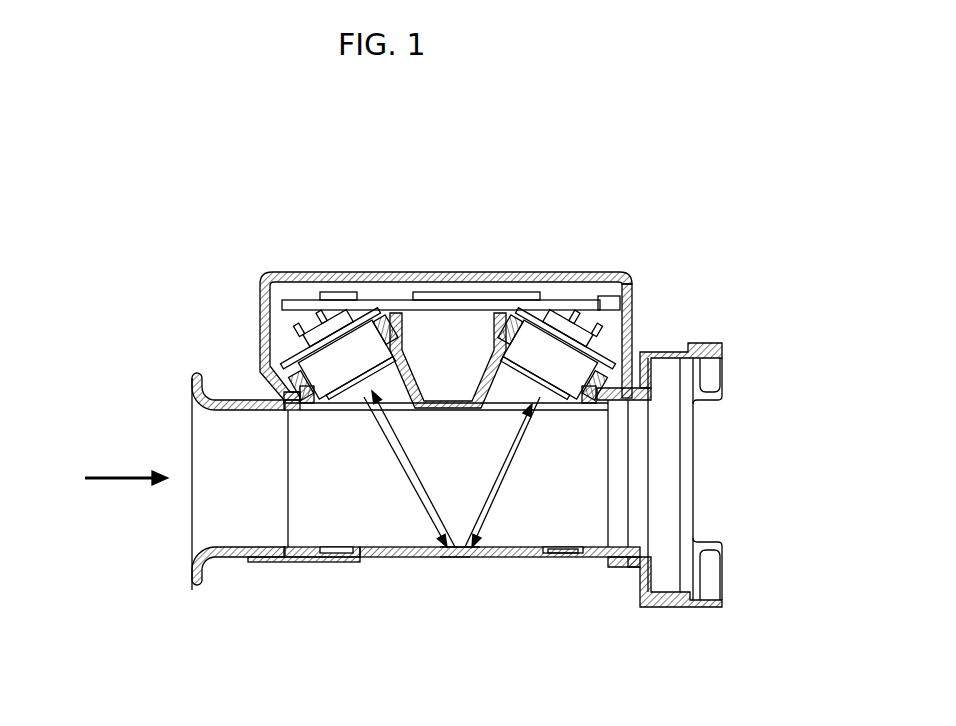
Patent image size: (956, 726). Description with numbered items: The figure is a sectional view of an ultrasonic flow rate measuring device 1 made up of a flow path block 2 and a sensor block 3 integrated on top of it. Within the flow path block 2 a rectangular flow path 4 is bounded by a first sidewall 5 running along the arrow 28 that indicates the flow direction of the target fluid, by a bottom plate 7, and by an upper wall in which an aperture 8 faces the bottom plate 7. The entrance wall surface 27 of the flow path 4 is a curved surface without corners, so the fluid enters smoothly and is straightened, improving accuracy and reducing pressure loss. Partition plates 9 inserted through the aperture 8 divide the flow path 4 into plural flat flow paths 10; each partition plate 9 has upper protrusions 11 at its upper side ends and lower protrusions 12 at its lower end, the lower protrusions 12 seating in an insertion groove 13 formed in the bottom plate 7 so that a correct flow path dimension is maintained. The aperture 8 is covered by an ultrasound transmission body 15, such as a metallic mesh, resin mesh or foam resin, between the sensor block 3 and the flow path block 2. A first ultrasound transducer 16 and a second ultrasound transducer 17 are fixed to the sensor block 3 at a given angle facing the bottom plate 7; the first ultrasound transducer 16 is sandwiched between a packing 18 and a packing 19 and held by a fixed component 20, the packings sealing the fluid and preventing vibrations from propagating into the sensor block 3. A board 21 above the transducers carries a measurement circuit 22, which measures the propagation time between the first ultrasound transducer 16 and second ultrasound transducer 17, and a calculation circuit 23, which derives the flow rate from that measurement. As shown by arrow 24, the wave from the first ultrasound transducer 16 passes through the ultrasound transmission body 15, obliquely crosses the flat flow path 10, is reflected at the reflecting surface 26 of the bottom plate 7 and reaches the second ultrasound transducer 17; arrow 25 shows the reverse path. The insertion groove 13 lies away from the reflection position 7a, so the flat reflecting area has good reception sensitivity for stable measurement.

The ultrasonic flow rate measuring device 1 is at (728, 287).
The flow path block 2 is at (658, 568).
The sensor block 3 is at (512, 274).
The flow path 4 is at (252, 510).
The first sidewall 5 is at (237, 455).
The bottom plate 7 is at (400, 558).
The reflection position 7a is at (465, 560).
The aperture 8 is at (398, 396).
The partition plate 9 is at (318, 512).
The flat flow path 10 is at (352, 510).
The upper protrusion 11 is at (283, 398).
The lower protrusion 12 is at (574, 558).
The insertion groove 13 is at (560, 558).
The ultrasound transmission body 15 is at (603, 402).
The first ultrasound transducer 16 is at (252, 291).
The second ultrasound transducer 17 is at (633, 292).
The packing 18 is at (298, 390).
The packing 19 is at (284, 345).
The fixed component 20 is at (296, 330).
The board 21 is at (566, 308).
The measurement circuit 22 is at (426, 293).
The calculation circuit 23 is at (330, 293).
The arrow 24 is at (403, 470).
The arrow 25 is at (492, 490).
The reflecting surface 26 is at (453, 560).
The entrance wall surface 27 is at (196, 568).
The arrow 28 is at (110, 482).